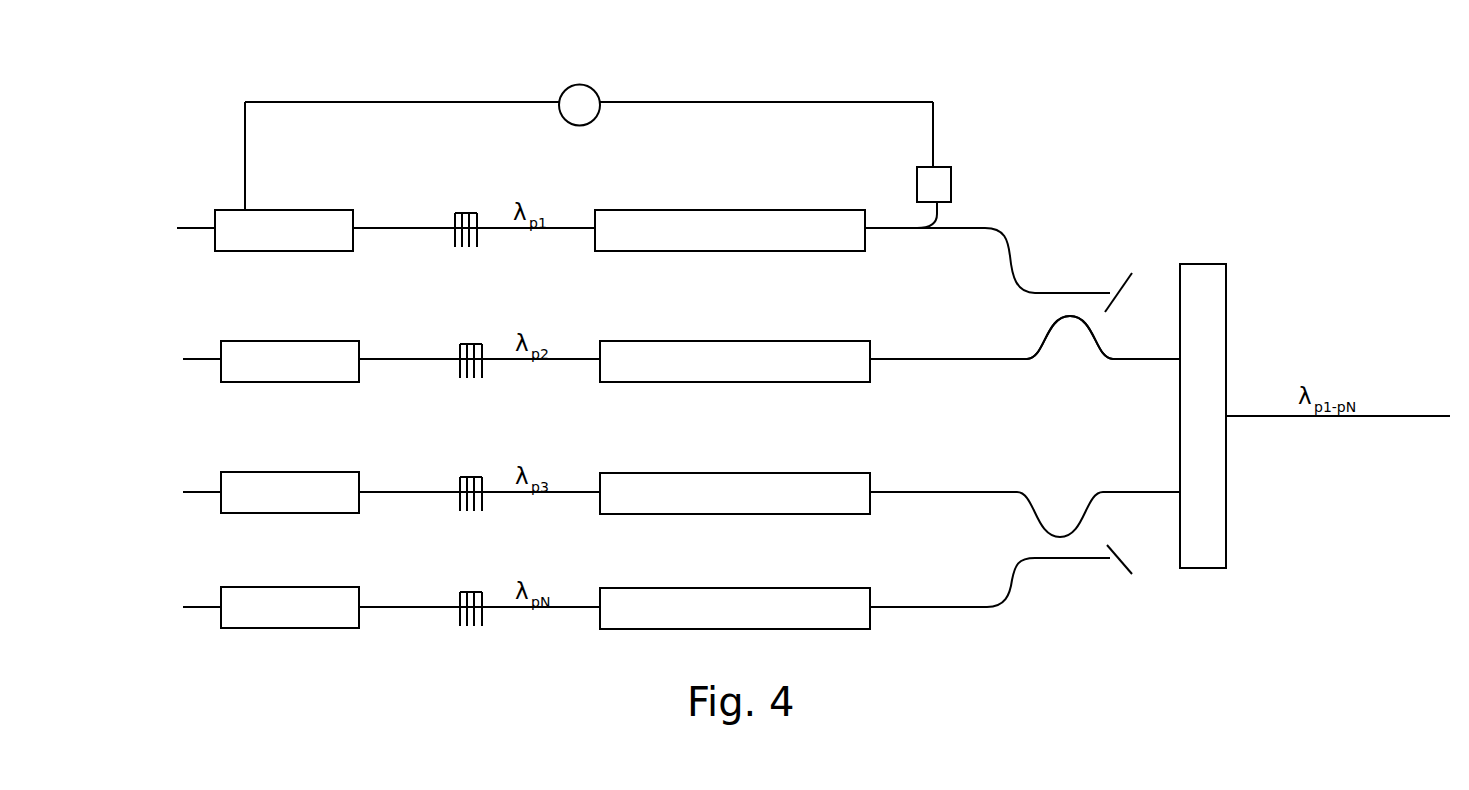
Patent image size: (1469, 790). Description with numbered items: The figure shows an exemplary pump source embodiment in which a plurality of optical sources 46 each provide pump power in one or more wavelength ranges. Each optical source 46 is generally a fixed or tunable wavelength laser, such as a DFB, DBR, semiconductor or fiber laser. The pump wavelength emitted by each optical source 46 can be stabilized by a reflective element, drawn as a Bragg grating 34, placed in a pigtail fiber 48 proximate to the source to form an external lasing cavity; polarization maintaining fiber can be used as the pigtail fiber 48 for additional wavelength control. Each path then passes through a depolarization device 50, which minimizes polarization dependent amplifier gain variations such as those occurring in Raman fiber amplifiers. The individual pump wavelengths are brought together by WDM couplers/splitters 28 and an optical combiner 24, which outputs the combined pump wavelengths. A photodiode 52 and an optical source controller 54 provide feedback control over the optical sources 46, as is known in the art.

The optical combiner 24 is at (1227, 300).
The WDM coupler/splitter 28 is at (1070, 316).
The Bragg grating 34 is at (467, 212).
The optical source 46 is at (219, 595).
The pigtail fiber 48 is at (397, 227).
The depolarization device 50 is at (637, 209).
The photodiode 52 is at (953, 183).
The optical source controller 54 is at (590, 83).